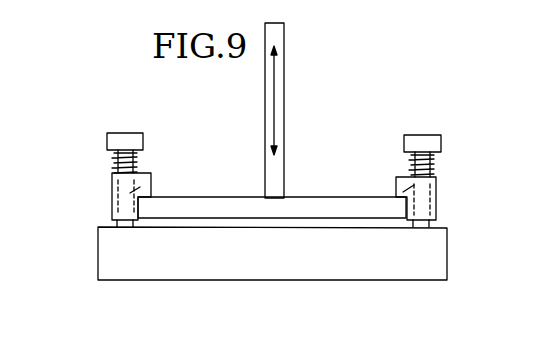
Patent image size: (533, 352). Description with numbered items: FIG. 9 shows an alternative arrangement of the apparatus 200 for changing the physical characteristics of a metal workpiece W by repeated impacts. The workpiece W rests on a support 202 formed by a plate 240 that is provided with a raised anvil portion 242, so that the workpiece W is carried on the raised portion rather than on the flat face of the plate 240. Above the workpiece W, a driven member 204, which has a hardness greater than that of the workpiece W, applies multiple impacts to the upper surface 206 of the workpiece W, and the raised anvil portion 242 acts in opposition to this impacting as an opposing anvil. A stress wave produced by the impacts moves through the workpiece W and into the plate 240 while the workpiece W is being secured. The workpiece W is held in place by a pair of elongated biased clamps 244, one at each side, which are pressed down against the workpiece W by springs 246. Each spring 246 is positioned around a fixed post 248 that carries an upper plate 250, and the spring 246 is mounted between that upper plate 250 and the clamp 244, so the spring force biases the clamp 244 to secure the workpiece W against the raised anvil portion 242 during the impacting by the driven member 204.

The apparatus 200 is at (297, 34).
The support 202 is at (447, 228).
The driven member 204 is at (284, 90).
The surface 206 is at (236, 197).
The plate 240 is at (98, 256).
The raised anvil portion 242 is at (361, 223).
The biased clamps 244 is at (112, 193).
The springs 246 is at (112, 160).
The fixed post 248 is at (150, 183).
The upper plate 250 is at (134, 133).
The workpiece W is at (336, 190).